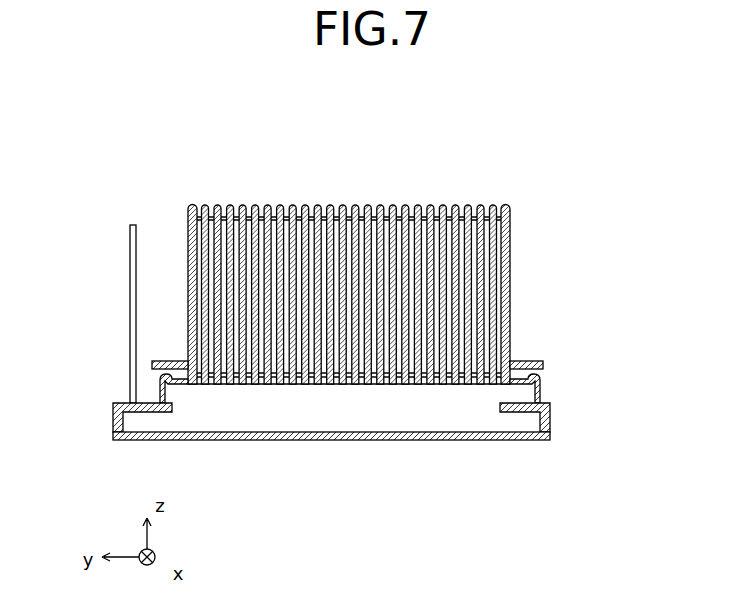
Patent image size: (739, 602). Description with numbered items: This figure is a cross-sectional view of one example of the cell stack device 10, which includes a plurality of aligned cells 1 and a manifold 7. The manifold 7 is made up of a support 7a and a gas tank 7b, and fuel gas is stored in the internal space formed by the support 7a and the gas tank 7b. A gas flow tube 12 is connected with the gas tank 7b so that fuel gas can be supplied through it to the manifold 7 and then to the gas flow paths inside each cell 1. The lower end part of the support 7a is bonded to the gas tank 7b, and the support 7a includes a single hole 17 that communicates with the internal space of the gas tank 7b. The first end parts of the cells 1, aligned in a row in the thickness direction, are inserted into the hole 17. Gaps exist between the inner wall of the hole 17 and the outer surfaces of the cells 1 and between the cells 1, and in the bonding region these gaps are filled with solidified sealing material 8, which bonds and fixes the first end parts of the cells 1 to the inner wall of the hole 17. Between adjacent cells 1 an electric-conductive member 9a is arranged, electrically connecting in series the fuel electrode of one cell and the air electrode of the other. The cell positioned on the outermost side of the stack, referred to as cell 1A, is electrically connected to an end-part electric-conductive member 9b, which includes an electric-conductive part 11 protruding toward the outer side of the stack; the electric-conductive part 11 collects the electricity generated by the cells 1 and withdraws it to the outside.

The cell 1 is at (397, 205).
The cell 1A is at (493, 205).
The manifold 7 is at (393, 428).
The support 7a is at (538, 386).
The gas tank 7b is at (551, 433).
The sealing material 8 is at (182, 384).
The electric-conductive member 9a is at (295, 205).
The end-part electric-conductive member 9b is at (187, 238).
The cell stack device 10 is at (193, 168).
The electric-conductive part 11 is at (152, 364).
The gas flow tube 12 is at (131, 275).
The hole 17 is at (525, 382).